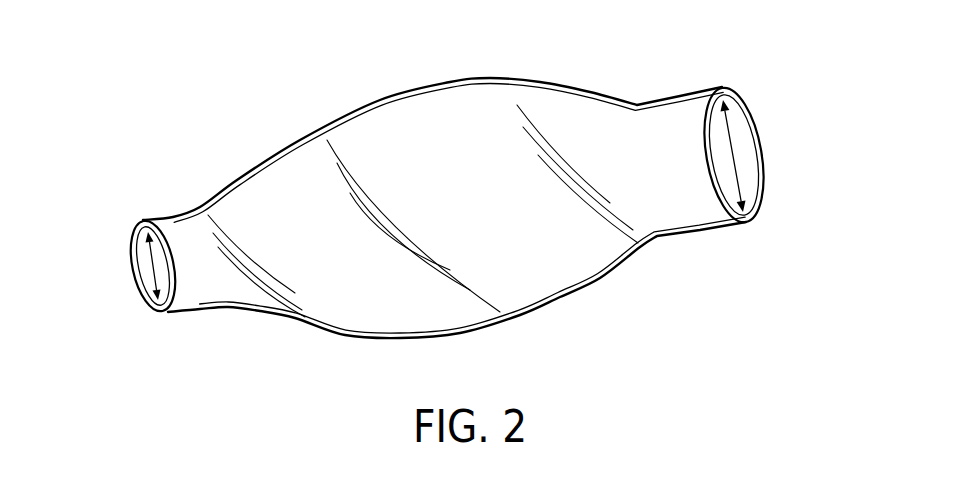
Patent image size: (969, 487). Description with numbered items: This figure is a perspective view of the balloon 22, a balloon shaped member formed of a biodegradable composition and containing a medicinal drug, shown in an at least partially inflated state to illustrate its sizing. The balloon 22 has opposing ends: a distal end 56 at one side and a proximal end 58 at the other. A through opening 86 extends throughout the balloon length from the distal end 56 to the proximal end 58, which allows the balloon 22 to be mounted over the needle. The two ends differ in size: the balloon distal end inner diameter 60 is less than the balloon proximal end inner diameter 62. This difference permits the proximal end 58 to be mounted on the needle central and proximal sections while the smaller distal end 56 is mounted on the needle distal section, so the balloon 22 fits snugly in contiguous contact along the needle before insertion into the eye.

The balloon 22 is at (406, 70).
The distal end 56 is at (173, 310).
The proximal end 58 is at (743, 226).
The balloon distal end inner diameter 60 is at (137, 267).
The balloon proximal end inner diameter 62 is at (737, 152).
The through opening 86 is at (742, 131).